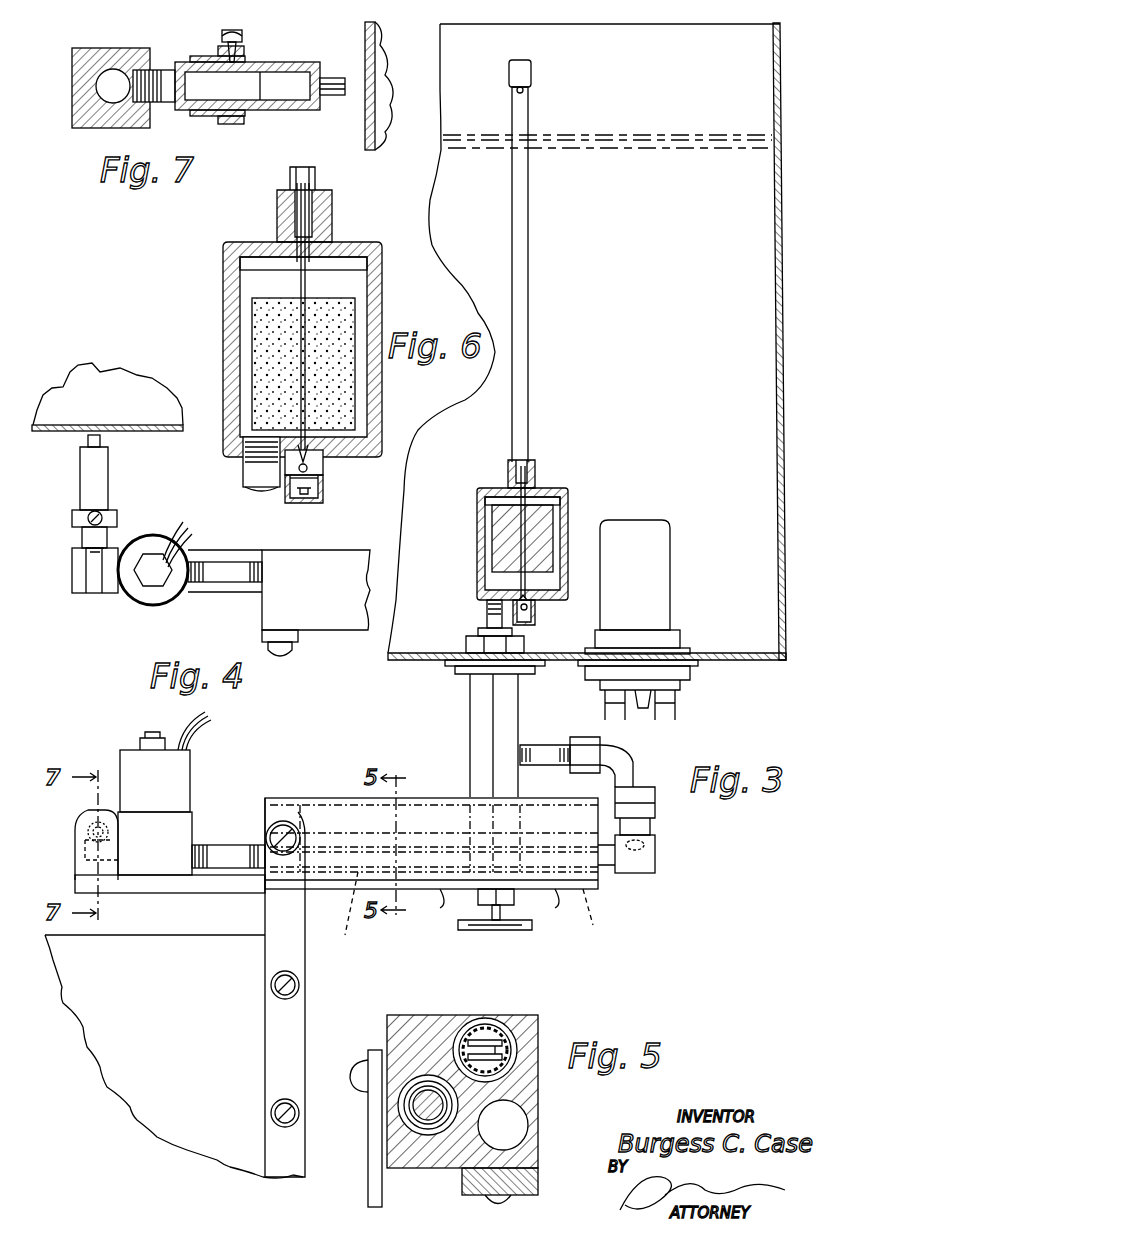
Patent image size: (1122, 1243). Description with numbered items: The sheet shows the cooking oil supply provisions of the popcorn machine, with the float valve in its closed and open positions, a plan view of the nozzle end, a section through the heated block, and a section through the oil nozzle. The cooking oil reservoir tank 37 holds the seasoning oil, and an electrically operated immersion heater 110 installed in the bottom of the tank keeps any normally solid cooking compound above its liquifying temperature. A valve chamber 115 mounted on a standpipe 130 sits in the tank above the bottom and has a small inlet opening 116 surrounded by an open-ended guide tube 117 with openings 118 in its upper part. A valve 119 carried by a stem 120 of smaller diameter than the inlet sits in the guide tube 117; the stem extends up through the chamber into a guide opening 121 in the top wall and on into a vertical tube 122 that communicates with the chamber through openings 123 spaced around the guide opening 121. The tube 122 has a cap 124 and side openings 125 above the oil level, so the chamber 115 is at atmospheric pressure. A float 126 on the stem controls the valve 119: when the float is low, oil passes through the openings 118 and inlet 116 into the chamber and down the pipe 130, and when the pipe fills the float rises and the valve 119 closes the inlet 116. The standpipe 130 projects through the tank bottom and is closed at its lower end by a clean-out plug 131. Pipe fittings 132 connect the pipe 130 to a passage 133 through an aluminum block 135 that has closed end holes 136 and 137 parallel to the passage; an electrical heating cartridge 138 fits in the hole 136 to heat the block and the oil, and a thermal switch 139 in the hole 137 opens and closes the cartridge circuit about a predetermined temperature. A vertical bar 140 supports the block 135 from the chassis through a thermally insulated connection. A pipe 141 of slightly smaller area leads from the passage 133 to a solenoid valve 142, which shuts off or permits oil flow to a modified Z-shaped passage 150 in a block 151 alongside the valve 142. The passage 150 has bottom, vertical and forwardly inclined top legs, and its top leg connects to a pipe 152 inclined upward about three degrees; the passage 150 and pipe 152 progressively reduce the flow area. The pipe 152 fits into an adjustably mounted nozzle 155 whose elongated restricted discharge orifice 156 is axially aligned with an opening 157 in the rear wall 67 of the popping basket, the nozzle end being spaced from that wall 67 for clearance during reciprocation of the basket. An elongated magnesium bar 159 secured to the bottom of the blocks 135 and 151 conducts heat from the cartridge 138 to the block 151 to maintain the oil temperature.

In FIG. 3, the cooking oil reservoir tank 37 is at (755, 662).
In FIG. 7, the wall 67 is at (375, 45).
In FIG. 3, the electrically operated immersion heater 110 is at (668, 573).
In FIG. 6, the valve chamber 115 is at (302, 349).
In FIG. 3, the valve chamber 115 is at (477, 535).
In FIG. 6, the inlet opening 116 is at (323, 465).
In FIG. 6, the guide tube 117 is at (323, 488).
In FIG. 3, the guide tube 117 is at (535, 618).
In FIG. 6, the openings 118 is at (290, 478).
In FIG. 6, the valve 119 is at (303, 494).
In FIG. 3, the valve 119 is at (536, 603).
In FIG. 6, the stem 120 is at (306, 286).
In FIG. 3, the stem 120 is at (526, 498).
In FIG. 6, the guide opening 121 is at (300, 262).
In FIG. 6, the vertical tube 122 is at (315, 172).
In FIG. 3, the vertical tube 122 is at (528, 258).
In FIG. 6, the openings 123 is at (332, 234).
In FIG. 3, the openings 123 is at (535, 476).
In FIG. 3, the cap 124 is at (531, 70).
In FIG. 3, the side openings 125 is at (524, 90).
In FIG. 6, the float 126 is at (335, 382).
In FIG. 3, the float 126 is at (548, 524).
In FIG. 6, the standpipe 130 is at (243, 470).
In FIG. 3, the standpipe 130 is at (487, 610).
In FIG. 3, the clean-out plug 131 is at (502, 930).
In FIG. 3, the pipe fittings 132 is at (628, 755).
In FIG. 3, the passage 133 is at (602, 919).
In FIG. 5, the passage 133 is at (513, 1128).
In FIG. 3, the block 135 is at (425, 798).
In FIG. 4, the block 135 is at (348, 630).
In FIG. 5, the block 135 is at (538, 1108).
In FIG. 3, the closed end hole 136 is at (348, 915).
In FIG. 5, the closed end hole 136 is at (398, 1100).
In FIG. 3, the closed end hole 137 is at (300, 835).
In FIG. 5, the closed end hole 137 is at (500, 1020).
In FIG. 3, the electrical heating cartridge 138 is at (610, 875).
In FIG. 5, the electrical heating cartridge 138 is at (428, 1088).
In FIG. 3, the thermal switch 139 is at (608, 797).
In FIG. 5, the thermal switch 139 is at (512, 1040).
In FIG. 3, the vertical bar 140 is at (295, 1014).
In FIG. 4, the vertical bar 140 is at (300, 645).
In FIG. 5, the vertical bar 140 is at (368, 1130).
In FIG. 3, the pipe 141 is at (228, 845).
In FIG. 4, the pipe 141 is at (222, 582).
In FIG. 3, the solenoid valve 142 is at (192, 812).
In FIG. 4, the solenoid valve 142 is at (140, 600).
In FIG. 7, the modified Z-shaped passage 150 is at (113, 92).
In FIG. 3, the modified Z-shaped passage 150 is at (85, 858).
In FIG. 7, the block 151 is at (150, 118).
In FIG. 3, the block 151 is at (80, 832).
In FIG. 4, the block 151 is at (72, 568).
In FIG. 7, the pipe 152 is at (162, 72).
In FIG. 4, the pipe 152 is at (107, 545).
In FIG. 7, the nozzle 155 is at (265, 62).
In FIG. 4, the nozzle 155 is at (108, 472).
In FIG. 7, the restricted discharge orifice 156 is at (338, 78).
In FIG. 7, the opening 157 is at (367, 92).
In FIG. 4, the opening 157 is at (97, 425).
In FIG. 3, the elongated bar 159 is at (205, 893).
In FIG. 4, the elongated bar 159 is at (210, 552).
In FIG. 5, the elongated bar 159 is at (462, 1188).